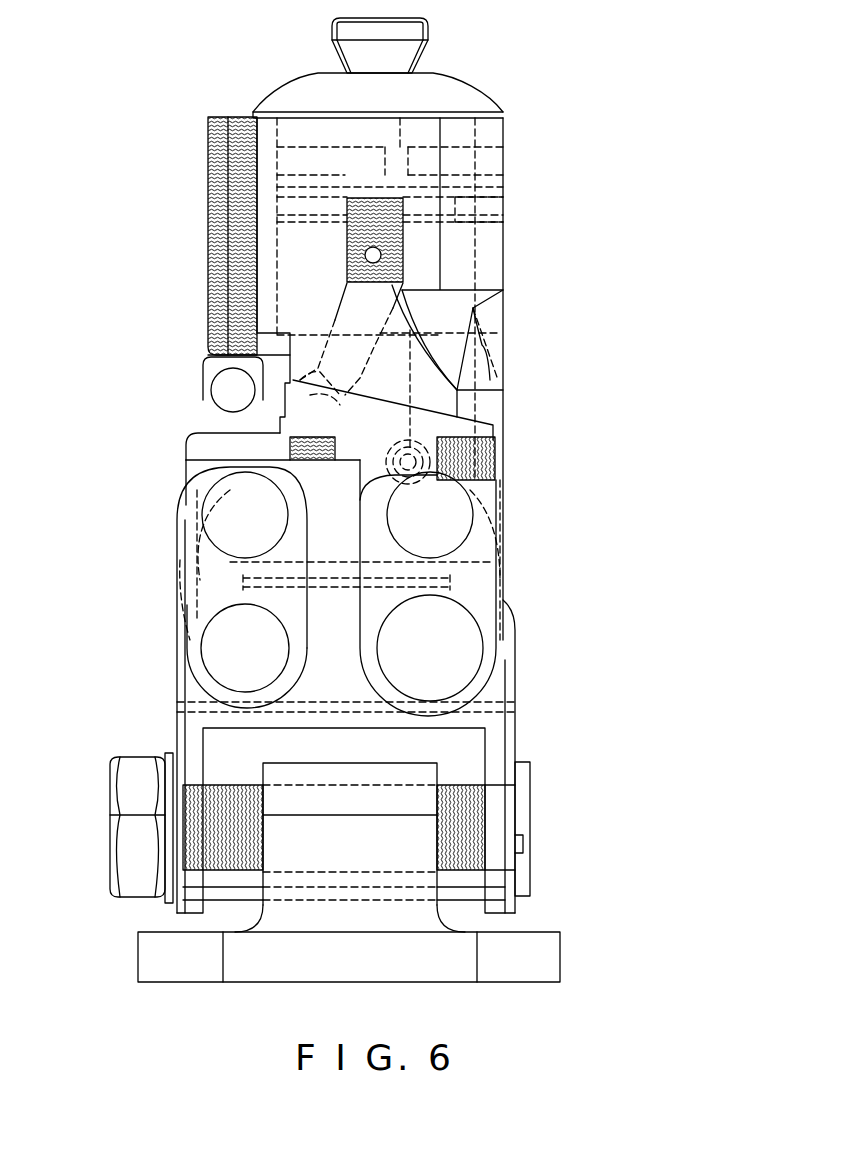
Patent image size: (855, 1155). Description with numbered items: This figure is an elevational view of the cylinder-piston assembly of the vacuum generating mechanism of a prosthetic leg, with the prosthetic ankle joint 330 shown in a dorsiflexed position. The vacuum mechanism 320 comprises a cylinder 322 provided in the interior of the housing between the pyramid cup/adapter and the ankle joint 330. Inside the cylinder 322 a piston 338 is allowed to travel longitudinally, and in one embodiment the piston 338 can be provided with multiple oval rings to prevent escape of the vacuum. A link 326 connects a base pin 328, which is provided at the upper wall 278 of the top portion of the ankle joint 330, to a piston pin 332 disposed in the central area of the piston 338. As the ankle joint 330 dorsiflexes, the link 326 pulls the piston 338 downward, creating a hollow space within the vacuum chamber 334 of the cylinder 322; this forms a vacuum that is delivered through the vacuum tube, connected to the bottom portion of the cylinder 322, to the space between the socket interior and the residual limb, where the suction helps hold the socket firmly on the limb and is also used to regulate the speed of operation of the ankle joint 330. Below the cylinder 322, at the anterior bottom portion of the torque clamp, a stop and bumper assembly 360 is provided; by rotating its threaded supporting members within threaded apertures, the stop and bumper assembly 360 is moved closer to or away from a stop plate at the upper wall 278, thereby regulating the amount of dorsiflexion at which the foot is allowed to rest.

The upper wall 278 is at (210, 448).
The vacuum mechanism 320 is at (535, 325).
The cylinder 322 is at (300, 258).
The link 326 is at (363, 313).
The base pin 328 is at (290, 400).
The ankle joint 330 is at (535, 678).
The piston pin 332 is at (385, 256).
The vacuum chamber 334 is at (343, 165).
The piston 338 is at (455, 200).
The stop and bumper assembly 360 is at (185, 408).